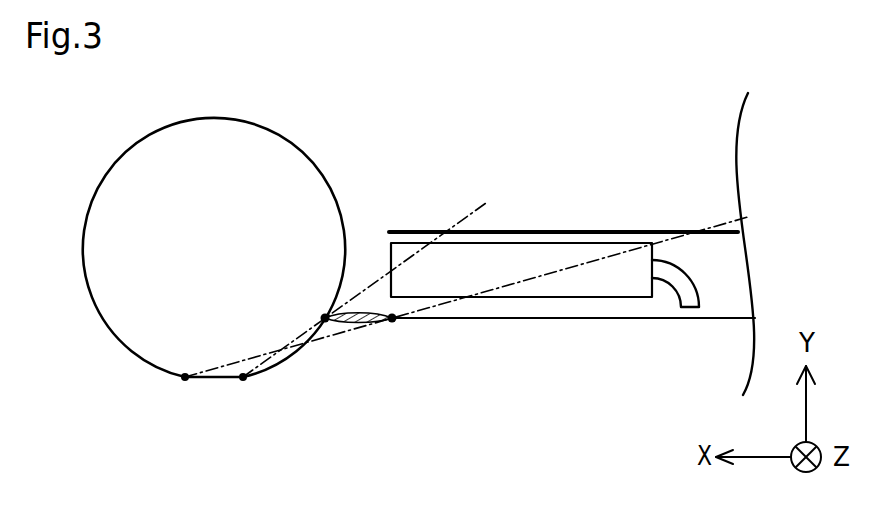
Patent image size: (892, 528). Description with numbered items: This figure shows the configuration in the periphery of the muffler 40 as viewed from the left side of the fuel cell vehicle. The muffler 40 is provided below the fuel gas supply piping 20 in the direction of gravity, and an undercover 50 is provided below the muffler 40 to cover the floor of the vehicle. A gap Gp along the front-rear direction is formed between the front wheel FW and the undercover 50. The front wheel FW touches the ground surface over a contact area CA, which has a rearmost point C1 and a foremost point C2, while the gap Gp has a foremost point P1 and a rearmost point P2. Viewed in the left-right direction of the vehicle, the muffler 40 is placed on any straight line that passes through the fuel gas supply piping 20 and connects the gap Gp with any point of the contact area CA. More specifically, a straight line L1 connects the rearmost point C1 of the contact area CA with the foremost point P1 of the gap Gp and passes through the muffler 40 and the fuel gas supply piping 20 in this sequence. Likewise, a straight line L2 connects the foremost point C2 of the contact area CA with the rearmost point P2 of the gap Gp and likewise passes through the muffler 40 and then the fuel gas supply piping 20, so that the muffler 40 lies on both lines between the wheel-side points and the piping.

The front wheel FW is at (88, 296).
The contact area CA is at (213, 380).
The foremost point of the contact area C2 is at (184, 381).
The rearmost point of the contact area C1 is at (244, 381).
The straight line L1 is at (473, 211).
The straight line L2 is at (522, 280).
The gap Gp is at (350, 324).
The foremost point of the gap P1 is at (324, 316).
The rearmost point of the gap P2 is at (392, 321).
The fuel gas supply piping 20 is at (565, 232).
The muffler 40 is at (568, 284).
The undercover 50 is at (480, 319).